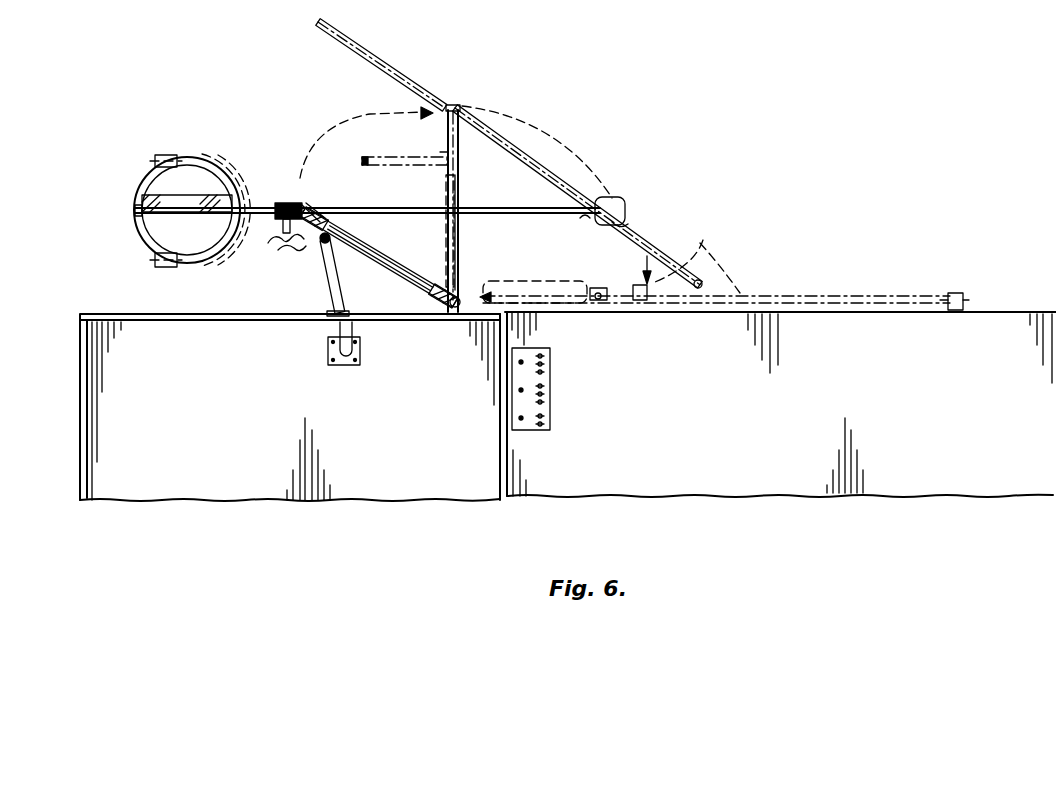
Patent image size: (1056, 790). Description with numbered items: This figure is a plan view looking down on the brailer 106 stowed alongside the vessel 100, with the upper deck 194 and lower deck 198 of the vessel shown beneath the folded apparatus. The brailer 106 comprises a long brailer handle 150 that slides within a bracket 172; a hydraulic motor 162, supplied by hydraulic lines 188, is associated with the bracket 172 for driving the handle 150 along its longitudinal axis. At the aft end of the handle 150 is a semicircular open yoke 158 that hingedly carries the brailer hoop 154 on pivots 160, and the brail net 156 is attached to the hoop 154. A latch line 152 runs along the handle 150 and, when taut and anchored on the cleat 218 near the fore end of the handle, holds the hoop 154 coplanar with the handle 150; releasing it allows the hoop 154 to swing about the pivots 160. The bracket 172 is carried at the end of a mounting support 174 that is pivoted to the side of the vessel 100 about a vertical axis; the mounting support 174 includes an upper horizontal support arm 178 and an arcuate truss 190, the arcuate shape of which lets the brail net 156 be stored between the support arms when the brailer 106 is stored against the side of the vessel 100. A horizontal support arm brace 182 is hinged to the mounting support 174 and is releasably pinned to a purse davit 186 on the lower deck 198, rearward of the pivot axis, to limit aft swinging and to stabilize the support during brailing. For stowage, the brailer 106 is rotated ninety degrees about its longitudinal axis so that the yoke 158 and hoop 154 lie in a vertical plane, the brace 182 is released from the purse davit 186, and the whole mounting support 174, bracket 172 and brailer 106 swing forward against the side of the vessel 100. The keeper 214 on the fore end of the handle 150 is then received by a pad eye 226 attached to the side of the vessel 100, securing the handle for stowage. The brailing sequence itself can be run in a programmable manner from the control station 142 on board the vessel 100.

The brailer 106 is at (207, 102).
The pivots 160 is at (170, 150).
The yoke 158 is at (190, 216).
The brailer hoop 154 is at (135, 207).
The brail net 156 is at (212, 178).
The bracket 172 is at (294, 198).
The hydraulic lines 188 is at (290, 240).
The hydraulic motor 162 is at (308, 213).
The upper horizontal support arm 178 is at (345, 236).
The arcuate truss 190 is at (402, 266).
The support arm brace 182 is at (432, 158).
The mounting support 174 is at (427, 306).
The purse davit 186 is at (360, 338).
The control station 142 is at (550, 401).
The brailer handle 150 is at (537, 205).
The keeper 214 is at (620, 203).
The cleat 218 is at (626, 222).
The latch line 152 is at (583, 222).
The pad eye 226 is at (965, 308).
The deck 194 is at (934, 391).
The vessel 100 is at (750, 458).
The lower deck 198 is at (272, 448).